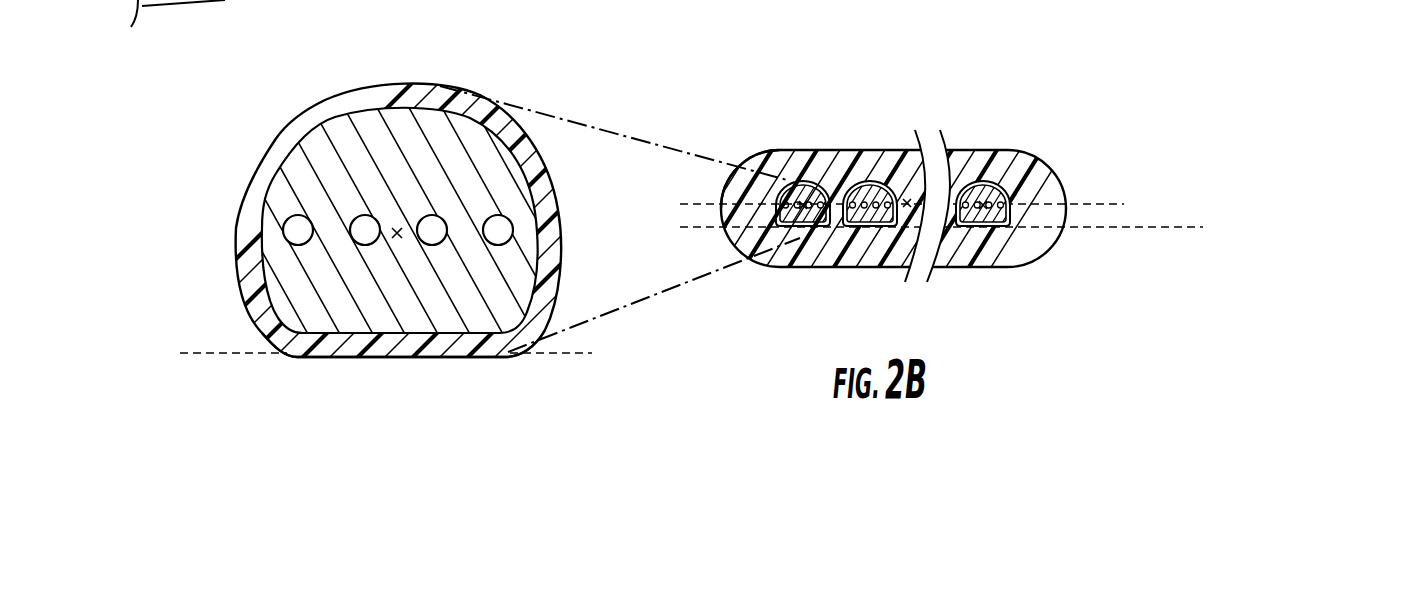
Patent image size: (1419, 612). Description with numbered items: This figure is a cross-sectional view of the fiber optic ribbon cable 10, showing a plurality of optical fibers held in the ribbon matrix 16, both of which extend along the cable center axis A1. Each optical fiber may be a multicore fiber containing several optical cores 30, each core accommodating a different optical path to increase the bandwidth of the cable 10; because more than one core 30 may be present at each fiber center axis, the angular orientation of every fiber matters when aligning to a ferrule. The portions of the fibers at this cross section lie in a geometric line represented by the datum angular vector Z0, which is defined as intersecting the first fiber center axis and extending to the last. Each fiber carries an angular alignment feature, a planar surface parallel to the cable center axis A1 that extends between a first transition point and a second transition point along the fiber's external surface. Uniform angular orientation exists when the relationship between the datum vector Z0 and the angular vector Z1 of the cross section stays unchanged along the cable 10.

The fiber optic ribbon cable 10 is at (1035, 140).
The ribbon matrix 16 is at (756, 150).
The optical core 30 is at (298, 238).
The cable center axis A1 is at (904, 198).
The datum angular vector Z0 is at (1124, 204).
The angular vector Z1 is at (592, 353).